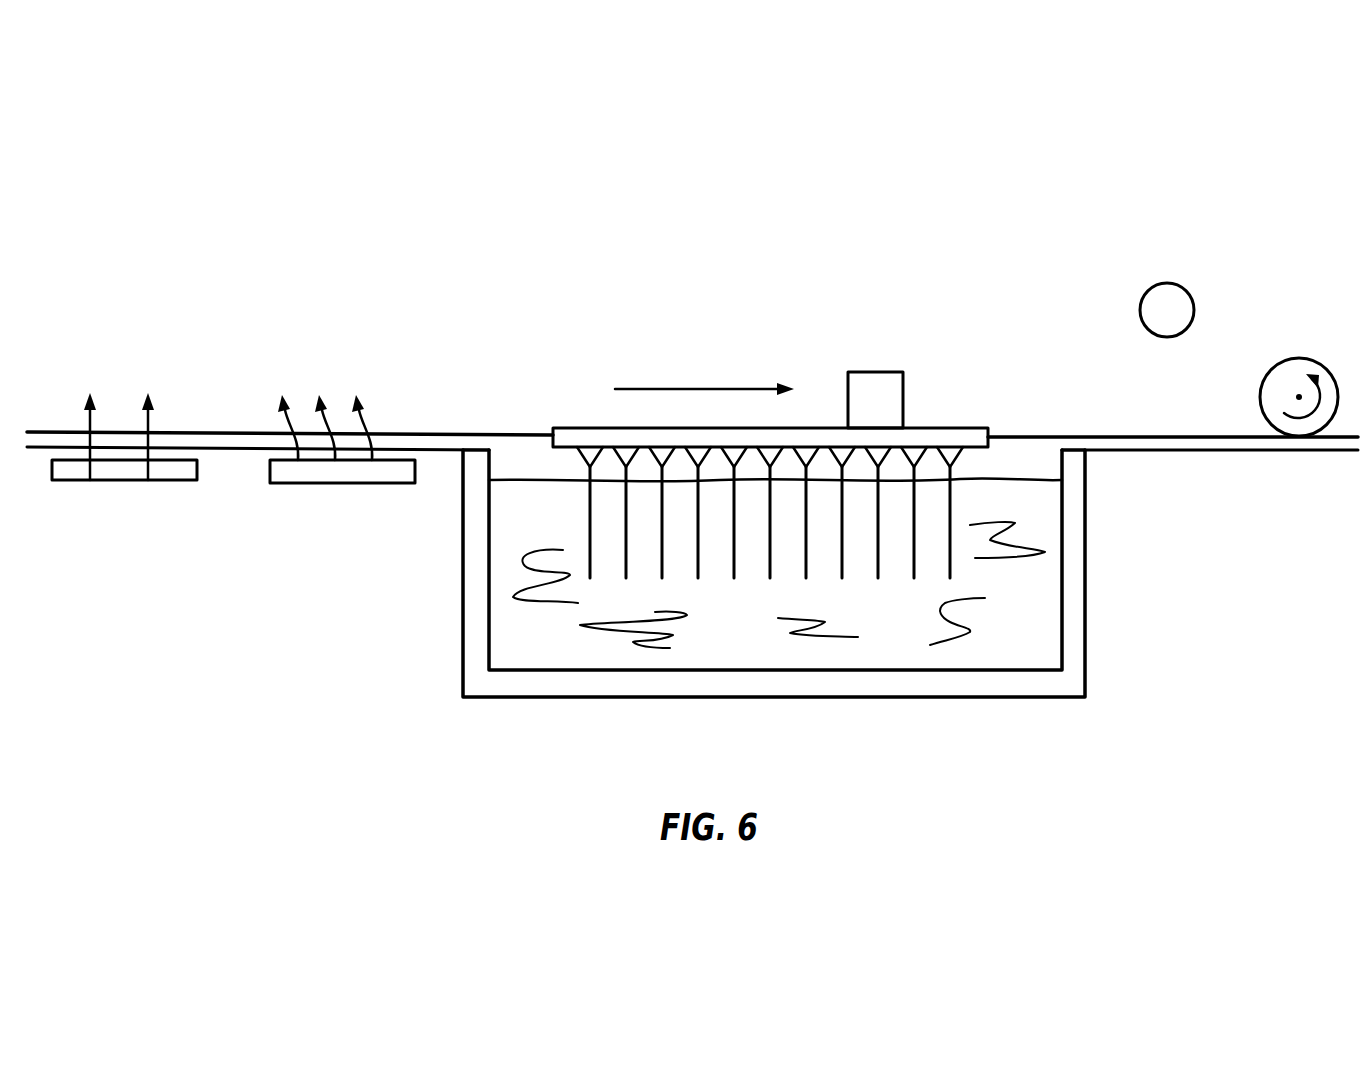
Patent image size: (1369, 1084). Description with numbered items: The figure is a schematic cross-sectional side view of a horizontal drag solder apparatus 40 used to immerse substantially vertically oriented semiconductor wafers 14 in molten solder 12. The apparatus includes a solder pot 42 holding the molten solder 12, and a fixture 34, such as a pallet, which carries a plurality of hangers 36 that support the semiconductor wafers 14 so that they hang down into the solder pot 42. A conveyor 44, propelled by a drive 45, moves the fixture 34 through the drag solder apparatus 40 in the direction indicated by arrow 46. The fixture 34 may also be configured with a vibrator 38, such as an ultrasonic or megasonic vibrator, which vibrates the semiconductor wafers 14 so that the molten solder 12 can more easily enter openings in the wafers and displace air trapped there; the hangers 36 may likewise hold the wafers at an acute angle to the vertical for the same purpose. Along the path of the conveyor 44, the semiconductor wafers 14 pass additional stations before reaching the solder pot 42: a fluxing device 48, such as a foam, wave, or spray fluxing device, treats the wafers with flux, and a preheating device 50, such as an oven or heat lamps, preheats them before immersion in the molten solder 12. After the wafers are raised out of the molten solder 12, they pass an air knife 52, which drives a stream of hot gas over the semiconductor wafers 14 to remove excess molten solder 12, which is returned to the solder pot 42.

The molten solder 12 is at (548, 648).
The semiconductor wafer 14 is at (590, 517).
The fixture 34 is at (972, 428).
The hangers 36 is at (583, 462).
The vibrator 38 is at (888, 395).
The drag solder apparatus 40 is at (450, 303).
The solder pot 42 is at (505, 685).
The conveyor 44 is at (401, 434).
The drive 45 is at (1295, 370).
The arrow 46 is at (699, 389).
The fluxing device 48 is at (118, 480).
The preheating device 50 is at (338, 483).
The air knife 52 is at (1176, 284).